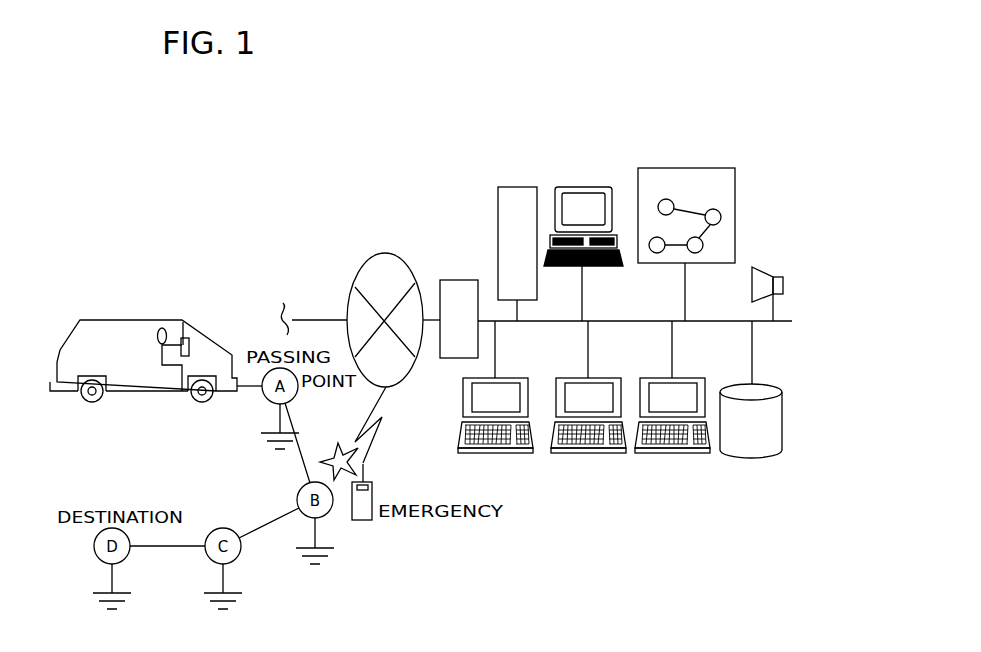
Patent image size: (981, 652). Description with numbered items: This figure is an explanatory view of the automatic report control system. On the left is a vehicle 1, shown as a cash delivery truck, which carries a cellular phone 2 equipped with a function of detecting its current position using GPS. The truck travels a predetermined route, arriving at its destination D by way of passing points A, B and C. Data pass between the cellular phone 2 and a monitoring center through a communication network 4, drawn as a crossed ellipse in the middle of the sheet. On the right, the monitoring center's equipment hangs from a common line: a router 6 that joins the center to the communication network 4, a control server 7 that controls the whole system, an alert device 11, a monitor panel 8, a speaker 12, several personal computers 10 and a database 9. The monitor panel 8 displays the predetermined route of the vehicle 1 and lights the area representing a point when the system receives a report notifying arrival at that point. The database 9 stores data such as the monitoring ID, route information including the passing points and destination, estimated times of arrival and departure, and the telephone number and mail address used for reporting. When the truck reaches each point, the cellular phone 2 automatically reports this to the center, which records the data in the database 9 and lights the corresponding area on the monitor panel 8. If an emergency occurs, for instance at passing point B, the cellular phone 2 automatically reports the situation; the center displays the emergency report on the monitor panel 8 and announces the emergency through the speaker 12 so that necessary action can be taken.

The vehicle 1 is at (96, 318).
The cellular phone 2 is at (182, 319).
The communication network 4 is at (385, 253).
The router 6 is at (459, 280).
The control server 7 is at (516, 187).
The monitor panel 8 is at (686, 168).
The database 9 is at (753, 459).
The personal computers 10 is at (496, 455).
The alert device 11 is at (582, 187).
The speaker 12 is at (752, 284).